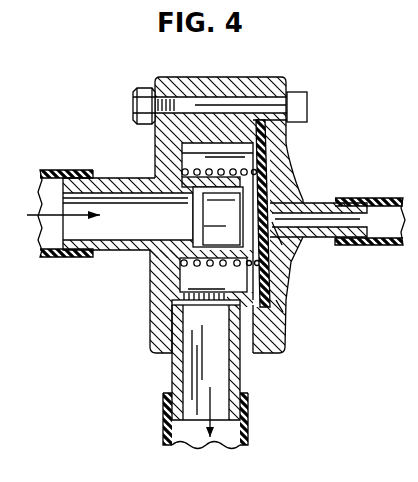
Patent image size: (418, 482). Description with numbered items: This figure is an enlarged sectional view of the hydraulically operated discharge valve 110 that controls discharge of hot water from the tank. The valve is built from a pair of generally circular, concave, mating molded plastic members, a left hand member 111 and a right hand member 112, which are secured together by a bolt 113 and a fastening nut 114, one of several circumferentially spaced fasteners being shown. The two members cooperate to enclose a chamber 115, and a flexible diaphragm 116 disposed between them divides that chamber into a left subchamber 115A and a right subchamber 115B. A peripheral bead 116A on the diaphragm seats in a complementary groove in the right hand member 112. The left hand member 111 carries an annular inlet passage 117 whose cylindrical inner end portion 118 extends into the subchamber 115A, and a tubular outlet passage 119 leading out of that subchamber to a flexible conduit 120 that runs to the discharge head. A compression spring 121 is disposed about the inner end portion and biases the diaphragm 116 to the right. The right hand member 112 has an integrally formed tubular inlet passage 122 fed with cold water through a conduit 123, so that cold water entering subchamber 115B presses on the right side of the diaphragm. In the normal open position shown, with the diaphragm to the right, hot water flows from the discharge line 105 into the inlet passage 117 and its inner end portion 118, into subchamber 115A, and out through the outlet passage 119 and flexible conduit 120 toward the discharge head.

The discharge line 105 is at (56, 172).
The discharge valve 110 is at (137, 135).
The left hand member 111 is at (160, 279).
The right hand member 112 is at (293, 273).
The bolt 113 is at (300, 110).
The fastening nut 114 is at (150, 90).
The chamber 115 is at (265, 283).
The subchamber 115A is at (254, 284).
The subchamber 115B is at (272, 226).
The flexible diaphragm 116 is at (291, 179).
The peripheral bead 116A is at (284, 137).
The annular inlet passage 117 is at (103, 224).
The cylindrical inner end portion 118 is at (250, 246).
The tubular outlet passage 119 is at (203, 370).
The flexible conduit 120 is at (168, 425).
The compression spring 121 is at (193, 160).
The tubular inlet passage 122 is at (312, 208).
The conduit 123 is at (390, 240).